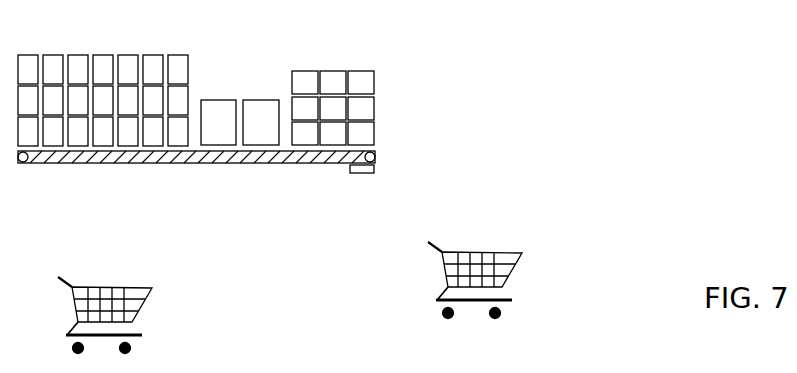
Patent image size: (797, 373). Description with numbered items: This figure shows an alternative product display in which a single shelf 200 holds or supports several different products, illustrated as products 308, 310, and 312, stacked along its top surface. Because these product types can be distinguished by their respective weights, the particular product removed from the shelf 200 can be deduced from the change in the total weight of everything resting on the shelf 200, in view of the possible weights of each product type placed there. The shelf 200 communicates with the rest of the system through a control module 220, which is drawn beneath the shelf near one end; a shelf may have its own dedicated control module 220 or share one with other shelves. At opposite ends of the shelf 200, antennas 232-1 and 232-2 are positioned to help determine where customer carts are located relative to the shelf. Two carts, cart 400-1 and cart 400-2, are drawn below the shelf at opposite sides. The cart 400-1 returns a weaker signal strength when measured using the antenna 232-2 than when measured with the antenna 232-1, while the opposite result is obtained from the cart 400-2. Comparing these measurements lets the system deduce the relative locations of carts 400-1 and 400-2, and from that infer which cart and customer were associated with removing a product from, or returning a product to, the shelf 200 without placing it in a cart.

The shelf 200 is at (174, 164).
The control module 220 is at (350, 168).
The antenna 232-1 is at (23, 163).
The antenna 232-2 is at (377, 156).
The product 308 is at (130, 67).
The product 310 is at (258, 108).
The product 312 is at (368, 83).
The cart 400-1 is at (130, 305).
The cart 400-2 is at (527, 280).